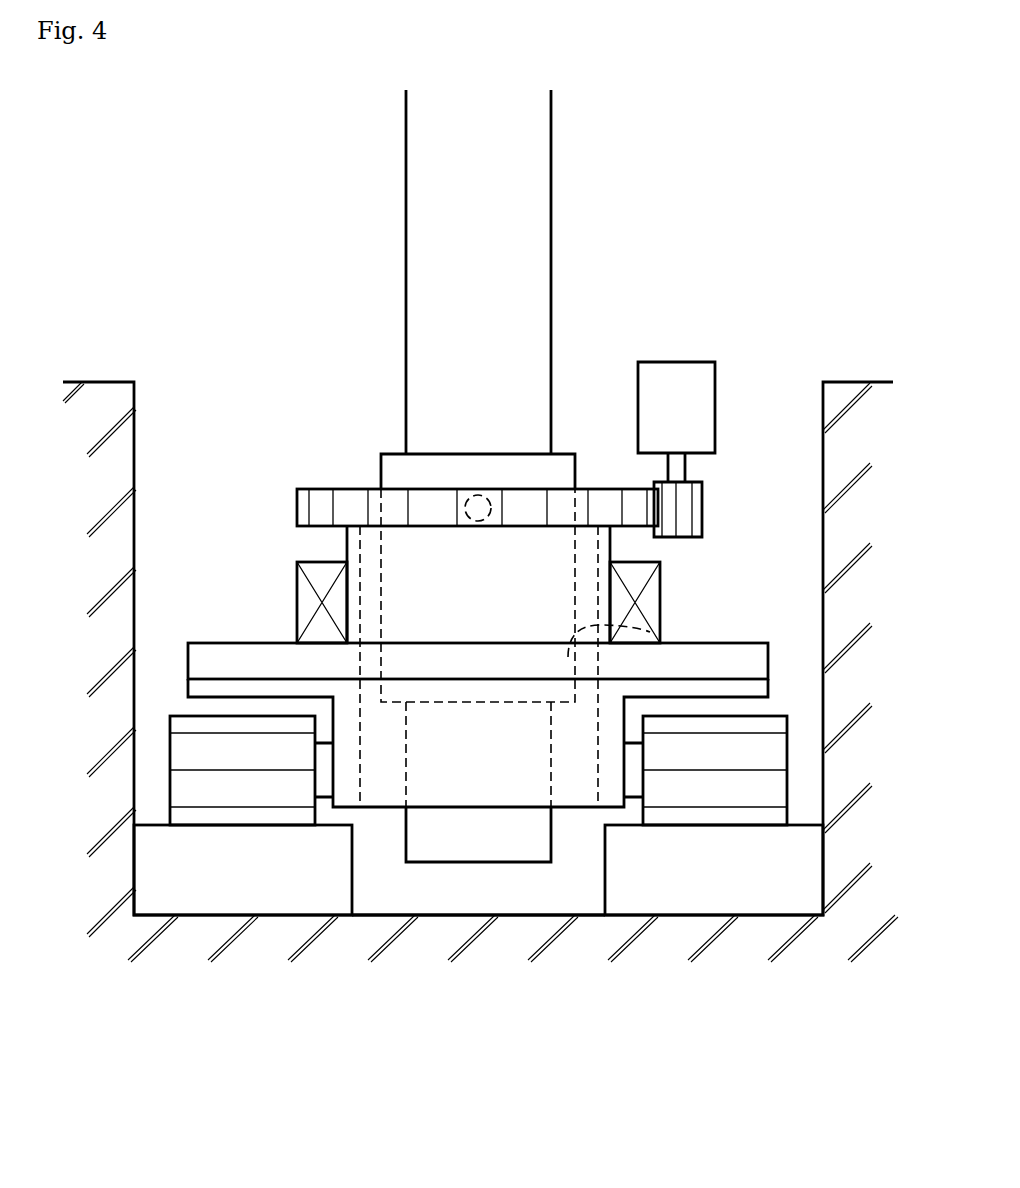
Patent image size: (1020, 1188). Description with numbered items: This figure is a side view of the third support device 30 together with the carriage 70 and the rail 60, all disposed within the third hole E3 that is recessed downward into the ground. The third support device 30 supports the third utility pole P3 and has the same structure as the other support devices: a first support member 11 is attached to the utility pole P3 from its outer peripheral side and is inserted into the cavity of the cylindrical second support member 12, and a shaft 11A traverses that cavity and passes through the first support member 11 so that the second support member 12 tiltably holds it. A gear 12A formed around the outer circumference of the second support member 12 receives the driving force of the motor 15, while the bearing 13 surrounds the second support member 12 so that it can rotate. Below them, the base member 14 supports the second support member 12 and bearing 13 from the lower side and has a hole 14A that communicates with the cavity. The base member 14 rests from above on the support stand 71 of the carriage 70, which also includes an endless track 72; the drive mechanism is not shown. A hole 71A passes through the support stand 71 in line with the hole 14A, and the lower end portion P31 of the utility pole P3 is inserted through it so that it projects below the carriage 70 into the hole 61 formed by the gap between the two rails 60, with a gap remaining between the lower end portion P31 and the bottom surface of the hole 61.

The third utility pole P3 is at (405, 167).
The motor 15 is at (677, 362).
The third hole E3 is at (134, 432).
The third support device 30 is at (431, 531).
The first support member 11 is at (381, 458).
The shaft 11A is at (487, 494).
The gear 12A is at (297, 508).
The second support member 12 is at (346, 540).
The bearing 13 is at (297, 588).
The base member 14 is at (470, 629).
The hole 14A is at (652, 632).
The carriage 70 is at (540, 766).
The support stand 71 is at (770, 690).
The hole 71A is at (360, 782).
The endless track 72 is at (789, 755).
The rail 60 is at (253, 893).
The hole 61 is at (548, 916).
The lower end portion P31 is at (488, 862).